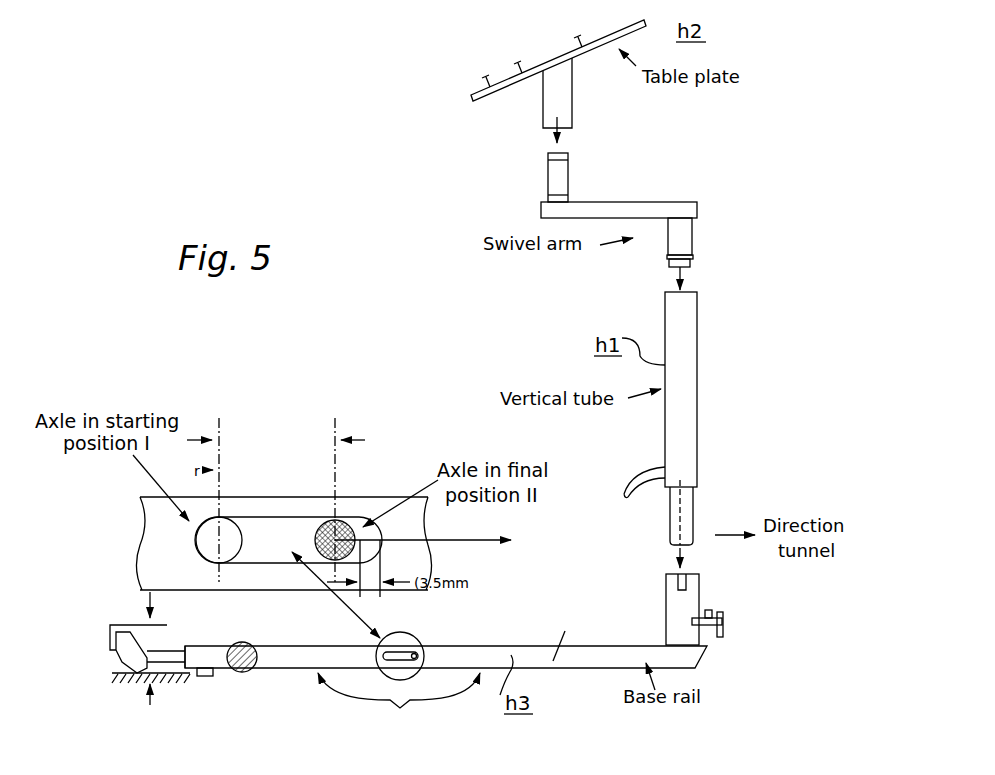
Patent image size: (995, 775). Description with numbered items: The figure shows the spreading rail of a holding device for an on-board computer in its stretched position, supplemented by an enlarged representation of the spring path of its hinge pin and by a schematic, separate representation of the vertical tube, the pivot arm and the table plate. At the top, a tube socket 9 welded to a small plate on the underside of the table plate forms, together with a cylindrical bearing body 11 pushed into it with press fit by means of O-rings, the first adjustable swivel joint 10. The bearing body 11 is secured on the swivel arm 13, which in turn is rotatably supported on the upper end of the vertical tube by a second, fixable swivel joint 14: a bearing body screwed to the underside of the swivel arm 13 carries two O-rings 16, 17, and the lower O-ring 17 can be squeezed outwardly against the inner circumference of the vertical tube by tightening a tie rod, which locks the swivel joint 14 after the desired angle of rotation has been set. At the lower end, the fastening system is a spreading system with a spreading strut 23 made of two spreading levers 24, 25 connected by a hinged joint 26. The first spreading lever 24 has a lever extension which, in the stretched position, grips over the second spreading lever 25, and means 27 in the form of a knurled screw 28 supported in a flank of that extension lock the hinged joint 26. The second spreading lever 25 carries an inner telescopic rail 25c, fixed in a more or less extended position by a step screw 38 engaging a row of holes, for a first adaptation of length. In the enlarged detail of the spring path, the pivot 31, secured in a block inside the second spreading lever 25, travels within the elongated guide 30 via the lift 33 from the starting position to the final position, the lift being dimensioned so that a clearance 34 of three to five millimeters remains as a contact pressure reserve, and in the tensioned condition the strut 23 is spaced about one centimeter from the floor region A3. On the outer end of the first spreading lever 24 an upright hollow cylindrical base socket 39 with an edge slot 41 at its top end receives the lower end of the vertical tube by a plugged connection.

The tube socket 9 is at (572, 100).
The first adjustable swivel joint 10 is at (548, 165).
The cylindrical bearing body 11 is at (551, 178).
The swivel arm 13 is at (626, 201).
The second fixable swivel joint 14 is at (697, 300).
The O-ring 16 is at (697, 218).
The lower O-ring 17 is at (666, 258).
The spreading strut 23 is at (399, 707).
The first spreading lever 24 is at (572, 668).
The second spreading lever 25 is at (280, 655).
The telescopic rail 25c is at (125, 650).
The hinged joint 26 is at (414, 648).
The means for detachably connecting 27 is at (236, 638).
The knurled screw 28 is at (244, 656).
The slot 30 is at (280, 520).
The pivot 31 is at (357, 518).
The lift 33 is at (283, 450).
The clearance 34 is at (373, 597).
The step screw 38 is at (210, 678).
The base socket 39 is at (666, 610).
The edge slot 41 is at (680, 573).
The floor region A3 is at (118, 688).